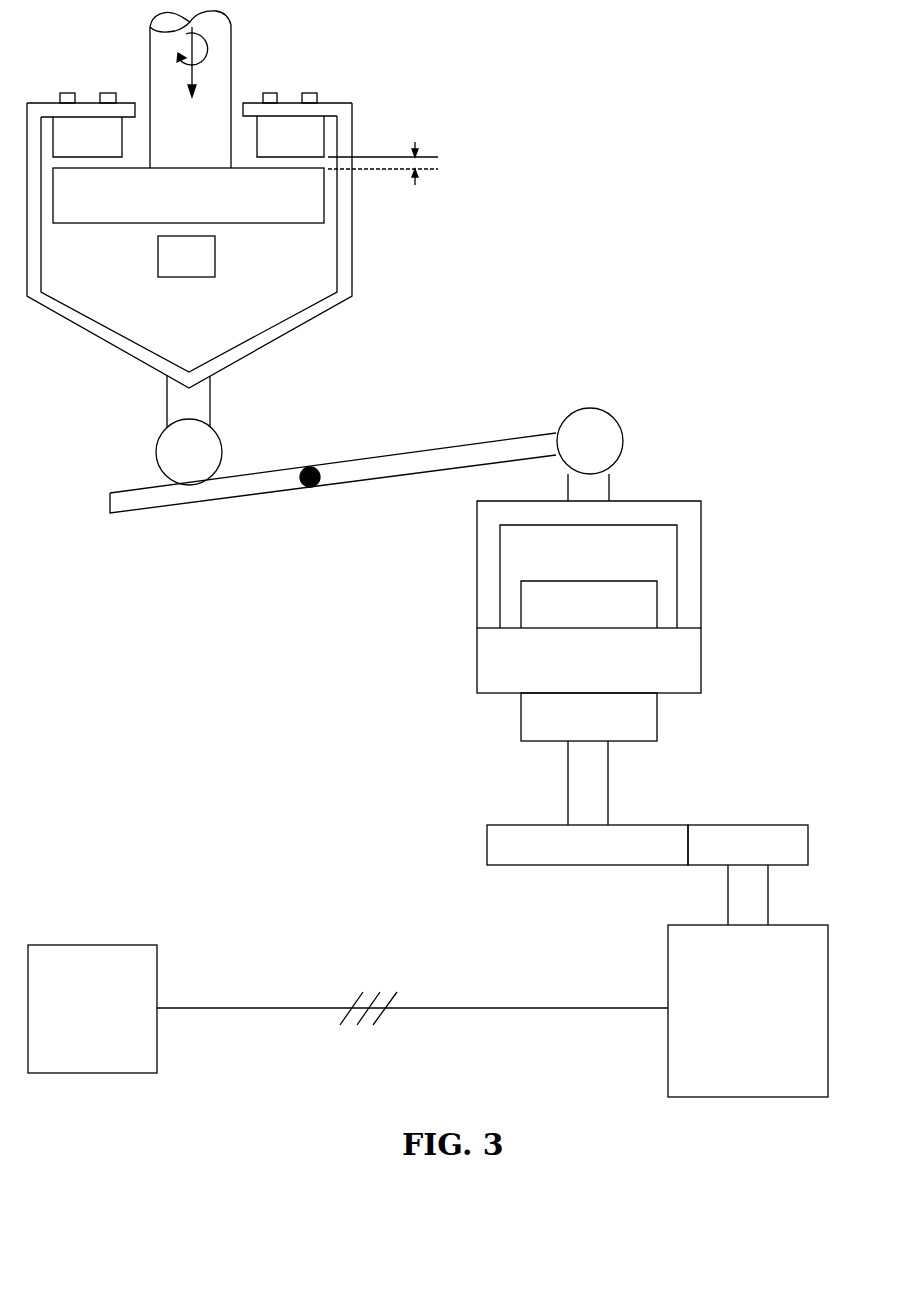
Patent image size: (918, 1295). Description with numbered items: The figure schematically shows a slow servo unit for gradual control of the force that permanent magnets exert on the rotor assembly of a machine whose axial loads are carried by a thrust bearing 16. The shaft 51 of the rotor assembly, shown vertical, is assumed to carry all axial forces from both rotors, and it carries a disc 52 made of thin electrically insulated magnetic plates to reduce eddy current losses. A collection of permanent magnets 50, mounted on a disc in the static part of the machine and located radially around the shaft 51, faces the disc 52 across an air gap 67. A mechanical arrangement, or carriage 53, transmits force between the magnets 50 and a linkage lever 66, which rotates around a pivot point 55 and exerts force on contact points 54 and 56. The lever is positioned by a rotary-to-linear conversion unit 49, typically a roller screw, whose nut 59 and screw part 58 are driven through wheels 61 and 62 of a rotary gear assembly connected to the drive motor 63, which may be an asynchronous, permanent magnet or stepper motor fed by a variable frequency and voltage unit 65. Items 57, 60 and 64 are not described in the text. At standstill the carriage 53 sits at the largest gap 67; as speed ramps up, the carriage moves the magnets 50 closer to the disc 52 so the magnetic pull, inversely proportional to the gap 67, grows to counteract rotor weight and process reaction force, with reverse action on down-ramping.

The thrust bearing 16 is at (186, 256).
The roller screw unit 49 is at (589, 583).
The permanent magnets 50 is at (188, 136).
The shaft 51 is at (190, 89).
The disc 52 is at (188, 195).
The carriage 53 is at (343, 297).
The contact point 54 is at (198, 445).
The pivot point 55 is at (312, 468).
The contact point 56 is at (597, 433).
The base 57 is at (589, 717).
The screw part 58 is at (692, 668).
The nut 59 is at (692, 573).
The shaft 60 is at (592, 793).
The wheel of rotary gear assembly 61 is at (587, 845).
The wheel of rotary gear assembly 62 is at (748, 875).
The drive motor 63 is at (748, 1011).
The communication line 64 is at (440, 1008).
The variable frequency and voltage unit 65 is at (92, 1009).
The linkage lever 66 is at (437, 462).
The air gap 67 is at (383, 182).